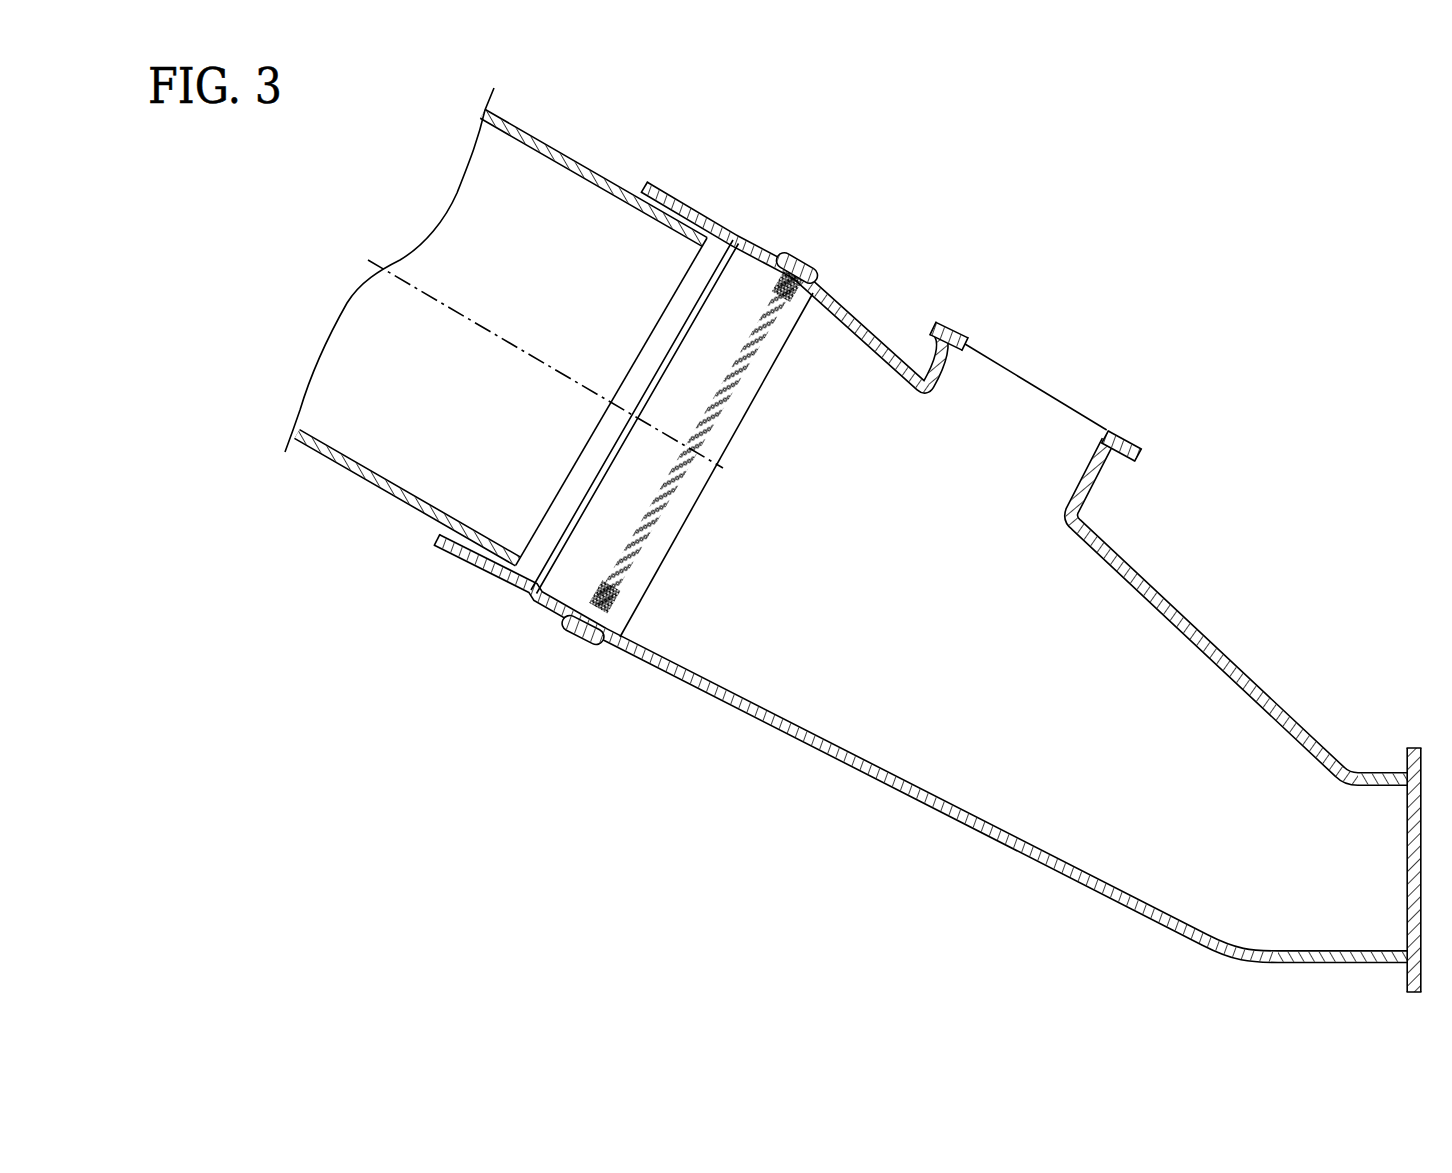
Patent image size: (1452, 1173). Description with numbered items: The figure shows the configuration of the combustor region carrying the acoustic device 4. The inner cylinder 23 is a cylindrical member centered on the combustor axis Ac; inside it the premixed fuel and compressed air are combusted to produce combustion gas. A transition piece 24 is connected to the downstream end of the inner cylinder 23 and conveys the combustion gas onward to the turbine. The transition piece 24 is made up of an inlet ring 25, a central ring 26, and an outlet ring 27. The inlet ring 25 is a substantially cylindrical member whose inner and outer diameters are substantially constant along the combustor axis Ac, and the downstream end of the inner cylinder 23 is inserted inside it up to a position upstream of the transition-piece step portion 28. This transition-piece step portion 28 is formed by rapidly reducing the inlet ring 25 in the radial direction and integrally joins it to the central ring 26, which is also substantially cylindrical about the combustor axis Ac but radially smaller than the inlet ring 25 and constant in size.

The acoustic device 4 is at (801, 261).
The inner cylinder 23 is at (540, 140).
The transition piece 24 is at (1001, 257).
The inlet ring 25 is at (697, 212).
The central ring 26 is at (550, 606).
The outlet ring 27 is at (789, 728).
The transition-piece step portion 28 is at (738, 239).
The combustor axis Ac is at (377, 260).